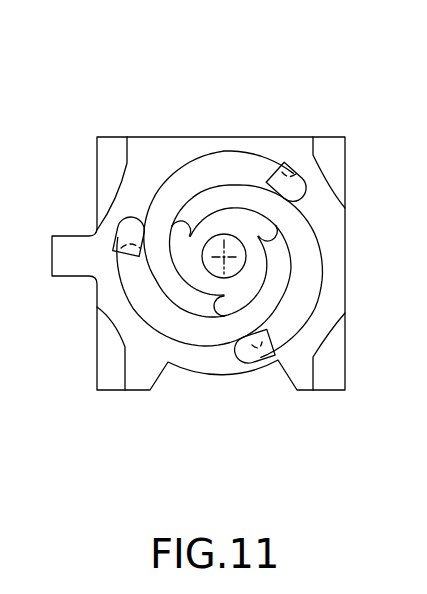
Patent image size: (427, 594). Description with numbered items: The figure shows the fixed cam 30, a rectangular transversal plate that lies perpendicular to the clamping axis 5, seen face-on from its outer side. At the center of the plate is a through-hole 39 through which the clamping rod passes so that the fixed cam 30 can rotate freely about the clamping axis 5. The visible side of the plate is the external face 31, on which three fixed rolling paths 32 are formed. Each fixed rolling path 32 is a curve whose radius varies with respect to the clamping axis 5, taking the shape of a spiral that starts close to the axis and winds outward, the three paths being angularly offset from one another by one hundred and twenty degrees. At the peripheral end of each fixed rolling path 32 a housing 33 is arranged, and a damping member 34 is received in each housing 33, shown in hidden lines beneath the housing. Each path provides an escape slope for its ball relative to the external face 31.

The fixed cam 30 is at (220, 230).
The external face 31 is at (165, 152).
The fixed rolling path 32 is at (237, 167).
The housing 33 is at (130, 222).
The damping member 34 is at (296, 175).
The through-hole 39 is at (214, 265).
The clamping axis 5 is at (214, 266).